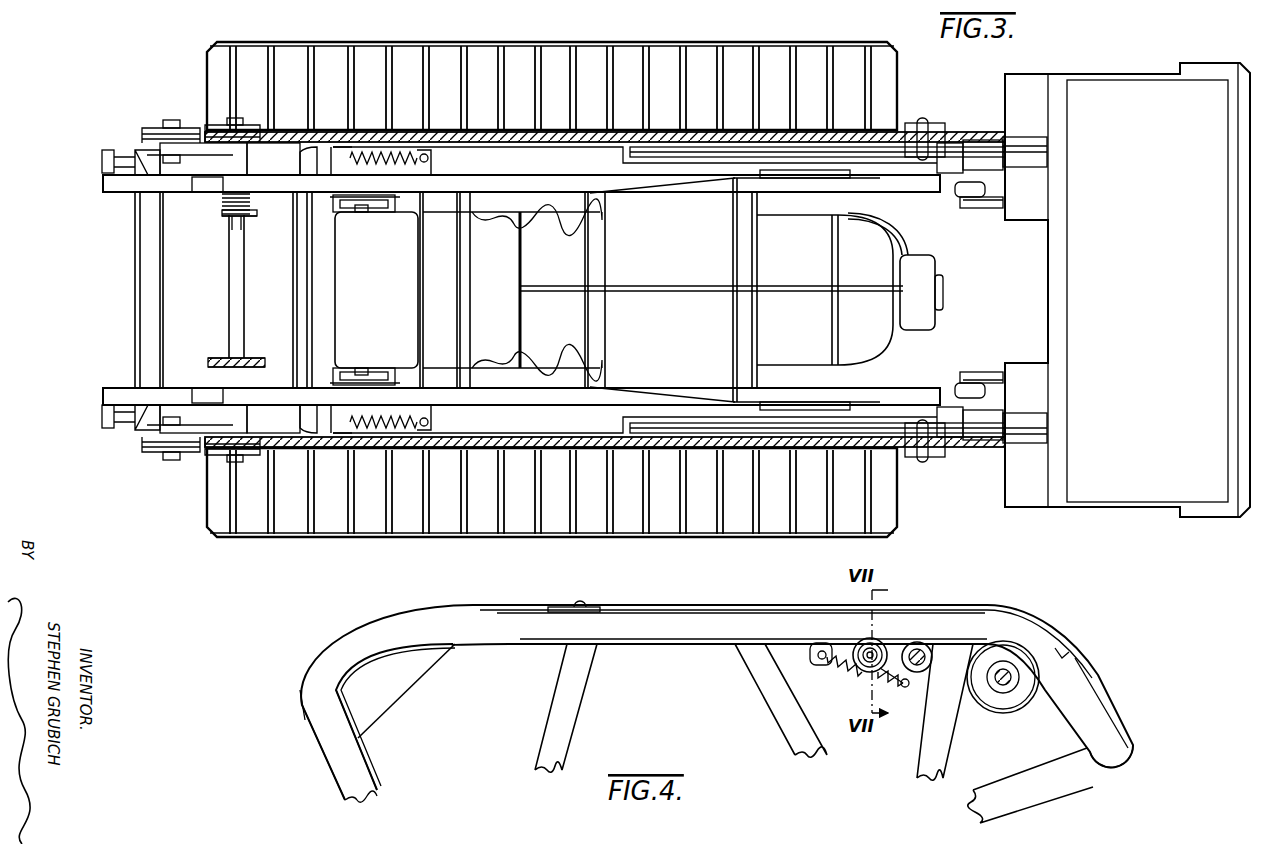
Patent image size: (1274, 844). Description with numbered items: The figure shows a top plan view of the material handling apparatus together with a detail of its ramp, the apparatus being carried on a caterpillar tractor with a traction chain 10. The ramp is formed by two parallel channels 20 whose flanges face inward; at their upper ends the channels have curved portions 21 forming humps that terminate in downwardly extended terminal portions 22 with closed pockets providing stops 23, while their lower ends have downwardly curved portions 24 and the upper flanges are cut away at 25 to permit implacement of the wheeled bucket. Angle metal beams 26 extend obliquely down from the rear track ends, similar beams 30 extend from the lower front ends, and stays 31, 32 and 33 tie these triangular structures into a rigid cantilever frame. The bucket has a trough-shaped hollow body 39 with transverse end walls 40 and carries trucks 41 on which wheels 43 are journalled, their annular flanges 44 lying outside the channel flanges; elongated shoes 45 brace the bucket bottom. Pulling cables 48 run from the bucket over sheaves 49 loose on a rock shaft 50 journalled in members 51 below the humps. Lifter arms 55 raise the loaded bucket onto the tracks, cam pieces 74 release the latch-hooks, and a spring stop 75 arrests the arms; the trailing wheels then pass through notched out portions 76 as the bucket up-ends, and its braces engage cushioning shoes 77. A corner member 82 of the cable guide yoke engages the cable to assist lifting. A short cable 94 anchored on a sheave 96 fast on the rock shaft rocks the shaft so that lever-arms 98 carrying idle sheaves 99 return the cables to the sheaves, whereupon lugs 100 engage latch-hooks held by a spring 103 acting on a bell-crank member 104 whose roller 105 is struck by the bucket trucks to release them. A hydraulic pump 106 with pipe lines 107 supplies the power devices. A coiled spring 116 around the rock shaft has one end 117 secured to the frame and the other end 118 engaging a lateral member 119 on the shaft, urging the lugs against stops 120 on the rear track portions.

In FIG. 3, the traction chain 10 is at (516, 50).
In FIG. 3, the channels 20 is at (618, 182).
In FIG. 4, the channels 20 is at (652, 648).
In FIG. 4, the curved portions 21 is at (1022, 622).
In FIG. 4, the terminal portions 22 is at (1095, 706).
In FIG. 4, the stops 23 is at (1122, 757).
In FIG. 4, the downwardly curved portions 24 is at (300, 688).
In FIG. 3, the cutaway 25 is at (748, 182).
In FIG. 4, the cutaway 25 is at (490, 610).
In FIG. 4, the angle metal beams 26 is at (1025, 780).
In FIG. 4, the beams 30 is at (358, 768).
In FIG. 4, the stay 31 is at (558, 742).
In FIG. 4, the stay 32 is at (788, 735).
In FIG. 4, the stay 33 is at (925, 762).
In FIG. 3, the hollow body 39 is at (1137, 278).
In FIG. 3, the transverse end walls 40 is at (1127, 287).
In FIG. 3, the trucks 41 is at (1000, 213).
In FIG. 3, the wheels 43 is at (975, 208).
In FIG. 3, the annular flanges 44 is at (945, 190).
In FIG. 3, the elongated shoes 45 is at (1040, 160).
In FIG. 3, the pulling cables 48 is at (553, 140).
In FIG. 3, the sheaves 49 is at (218, 128).
In FIG. 3, the rock shaft 50 is at (235, 280).
In FIG. 4, the rock shaft 50 is at (1015, 672).
In FIG. 3, the members 51 is at (247, 162).
In FIG. 3, the lifter arms 55 is at (683, 160).
In FIG. 3, the cam pieces 74 is at (845, 193).
In FIG. 4, the spring stop 75 is at (575, 606).
In FIG. 3, the notched out portions 76 is at (210, 190).
In FIG. 4, the notched out portions 76 is at (1068, 660).
In FIG. 3, the shoes 77 is at (102, 160).
In FIG. 3, the corner member 82 is at (935, 125).
In FIG. 3, the cable 94 is at (280, 352).
In FIG. 3, the sheave 96 is at (212, 360).
In FIG. 4, the sheave 96 is at (1018, 662).
In FIG. 3, the lever-arms 98 is at (190, 162).
In FIG. 3, the idle sheaves 99 is at (160, 128).
In FIG. 3, the lugs 100 is at (150, 150).
In FIG. 3, the spring 103 is at (372, 150).
In FIG. 4, the spring 103 is at (850, 670).
In FIG. 3, the bell-crank member 104 is at (355, 205).
In FIG. 4, the bell-crank member 104 is at (892, 642).
In FIG. 3, the roller 105 is at (385, 205).
In FIG. 4, the roller 105 is at (865, 640).
In FIG. 3, the hydraulic pump 106 is at (938, 272).
In FIG. 3, the pipe lines 107 is at (895, 222).
In FIG. 3, the coiled spring 116 is at (222, 205).
In FIG. 3, the end 117 is at (250, 210).
In FIG. 3, the end 118 is at (250, 216).
In FIG. 3, the lateral member 119 is at (229, 225).
In FIG. 3, the stops 120 is at (145, 160).